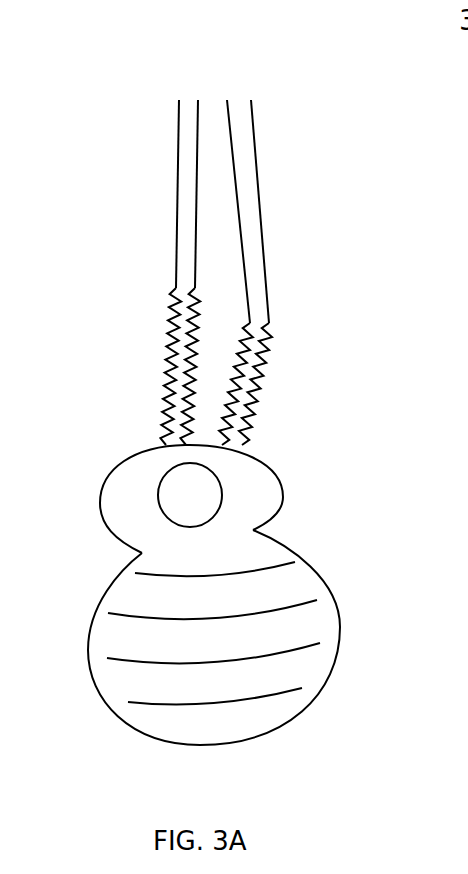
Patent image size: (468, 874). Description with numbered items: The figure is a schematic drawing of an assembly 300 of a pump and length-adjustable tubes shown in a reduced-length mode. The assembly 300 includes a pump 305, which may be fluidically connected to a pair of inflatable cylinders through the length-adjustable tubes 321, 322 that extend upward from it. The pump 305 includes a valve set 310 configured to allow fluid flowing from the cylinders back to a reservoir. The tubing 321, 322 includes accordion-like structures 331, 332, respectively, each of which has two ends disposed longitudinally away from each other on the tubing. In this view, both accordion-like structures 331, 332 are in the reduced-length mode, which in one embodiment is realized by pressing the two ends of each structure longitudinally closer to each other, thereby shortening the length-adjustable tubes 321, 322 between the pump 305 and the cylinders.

The assembly 300 is at (103, 158).
The pump 305 is at (307, 664).
The valve set 310 is at (208, 500).
The length-adjustable tube 321 is at (258, 267).
The length-adjustable tube 322 is at (178, 203).
The accordion-like structure 331 is at (243, 393).
The accordion-like structure 332 is at (187, 323).